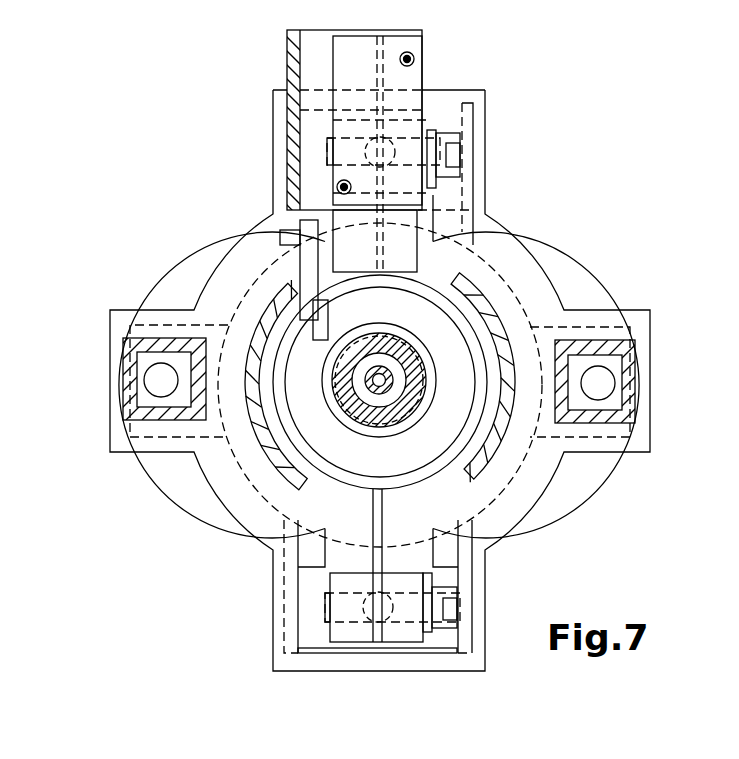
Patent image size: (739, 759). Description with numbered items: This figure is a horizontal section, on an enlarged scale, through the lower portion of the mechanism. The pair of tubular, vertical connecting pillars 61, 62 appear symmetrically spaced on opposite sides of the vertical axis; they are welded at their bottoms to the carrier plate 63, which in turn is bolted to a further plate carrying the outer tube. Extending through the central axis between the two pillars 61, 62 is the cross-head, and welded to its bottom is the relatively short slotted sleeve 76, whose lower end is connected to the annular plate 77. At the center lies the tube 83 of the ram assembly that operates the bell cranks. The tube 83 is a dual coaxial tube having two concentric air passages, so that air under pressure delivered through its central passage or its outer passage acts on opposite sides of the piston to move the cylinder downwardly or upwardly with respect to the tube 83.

The connecting pillar 61 is at (123, 385).
The connecting pillar 62 is at (650, 385).
The carrier plate 63 is at (507, 243).
The slotted sleeve 76 is at (493, 303).
The annular plate 77 is at (250, 290).
The tube 83 is at (398, 412).